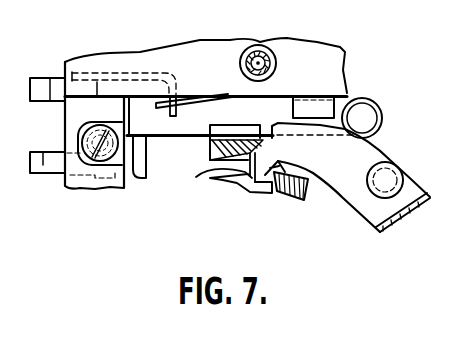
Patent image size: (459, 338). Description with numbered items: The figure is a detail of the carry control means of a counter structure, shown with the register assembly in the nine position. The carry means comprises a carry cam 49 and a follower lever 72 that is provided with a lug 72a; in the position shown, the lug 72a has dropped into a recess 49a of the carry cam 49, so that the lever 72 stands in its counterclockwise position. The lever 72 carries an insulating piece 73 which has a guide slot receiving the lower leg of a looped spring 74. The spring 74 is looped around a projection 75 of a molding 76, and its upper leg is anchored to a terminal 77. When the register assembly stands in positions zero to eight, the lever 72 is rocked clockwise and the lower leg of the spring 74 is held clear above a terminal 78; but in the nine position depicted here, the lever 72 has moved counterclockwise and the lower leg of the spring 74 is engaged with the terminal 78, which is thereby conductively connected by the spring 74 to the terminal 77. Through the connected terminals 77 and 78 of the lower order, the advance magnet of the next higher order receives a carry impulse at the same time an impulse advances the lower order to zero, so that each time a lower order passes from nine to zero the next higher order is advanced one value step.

The carry cam 49 is at (240, 184).
The recess 49a is at (206, 180).
The follower lever 72 is at (352, 177).
The lug 72a is at (288, 160).
The insulating piece 73 is at (210, 153).
The looped spring 74 is at (220, 100).
The projection 75 is at (360, 110).
The molding 76 is at (325, 50).
The terminal 77 is at (55, 93).
The terminal 78 is at (36, 173).